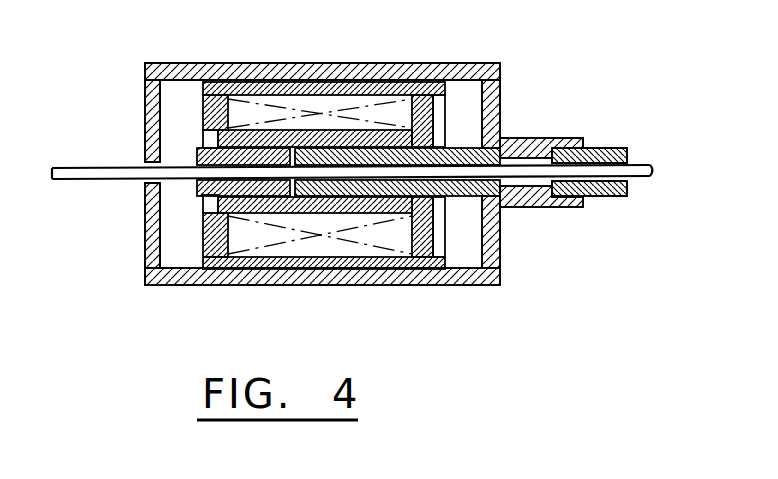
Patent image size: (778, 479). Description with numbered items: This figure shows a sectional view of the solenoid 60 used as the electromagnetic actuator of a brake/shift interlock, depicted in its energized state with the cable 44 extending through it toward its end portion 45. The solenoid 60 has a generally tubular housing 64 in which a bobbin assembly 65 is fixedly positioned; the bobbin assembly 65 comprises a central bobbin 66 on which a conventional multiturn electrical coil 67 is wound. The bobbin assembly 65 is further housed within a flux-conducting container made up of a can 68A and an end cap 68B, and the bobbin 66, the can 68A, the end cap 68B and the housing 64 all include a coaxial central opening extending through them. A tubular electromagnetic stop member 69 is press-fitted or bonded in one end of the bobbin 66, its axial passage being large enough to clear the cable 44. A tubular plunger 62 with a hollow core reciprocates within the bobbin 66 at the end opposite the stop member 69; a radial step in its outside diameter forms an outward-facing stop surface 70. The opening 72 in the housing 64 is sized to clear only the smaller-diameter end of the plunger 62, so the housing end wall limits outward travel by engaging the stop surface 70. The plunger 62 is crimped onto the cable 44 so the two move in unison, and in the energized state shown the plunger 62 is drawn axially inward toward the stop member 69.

The solenoid 60 is at (363, 162).
The housing 64 is at (418, 63).
The bobbin assembly 65 is at (193, 108).
The tubular electromagnetic stop member 69 is at (200, 150).
The cable 44 is at (363, 149).
The stop surface 70 is at (450, 150).
The opening 72 is at (512, 163).
The threaded end of shaft 45 is at (610, 149).
The plunger 62 is at (478, 203).
The bobbin 66 is at (210, 247).
The electrical coil 67 is at (258, 250).
The can 68A is at (310, 263).
The end cap 68B is at (435, 235).